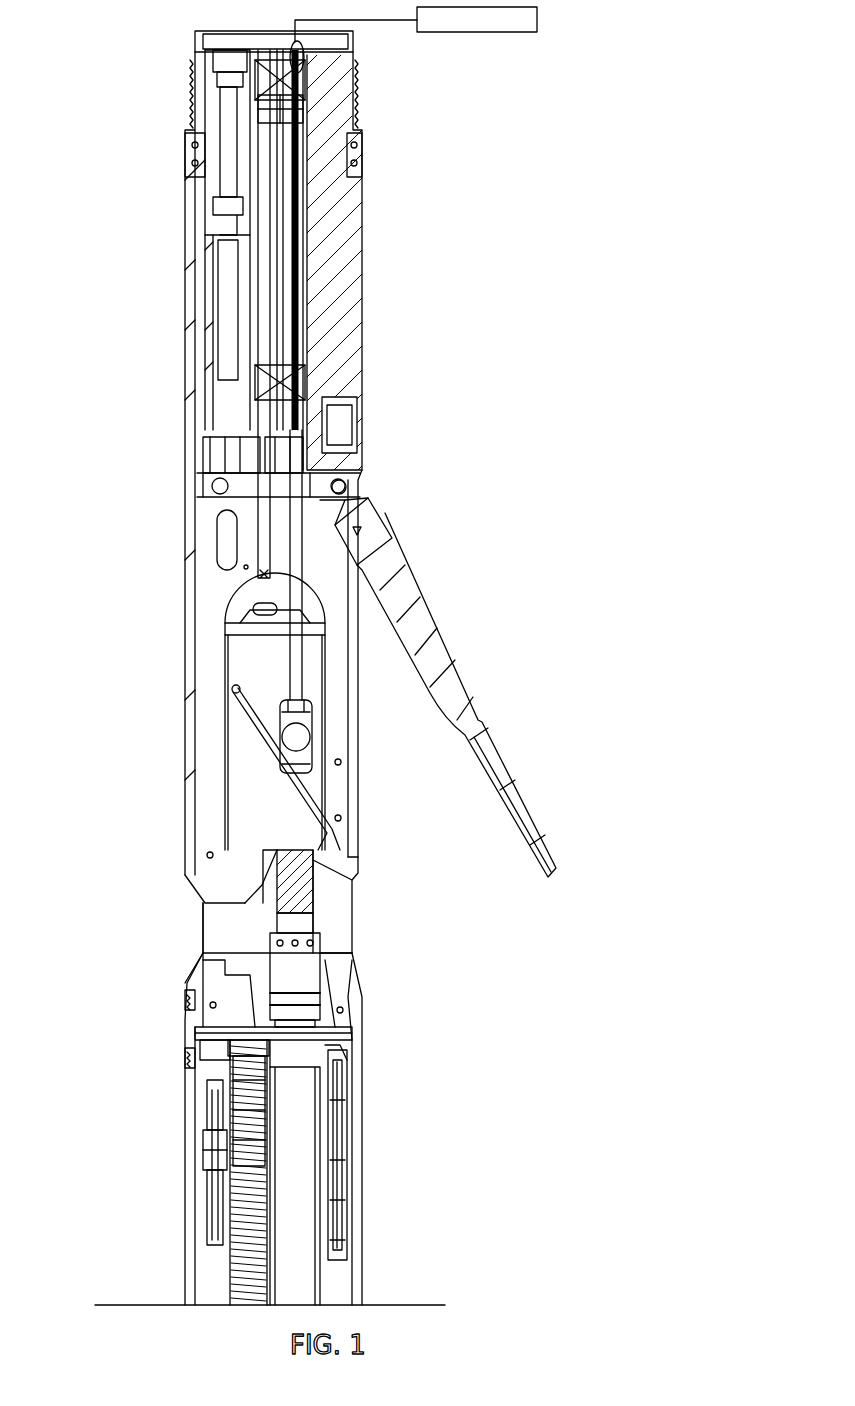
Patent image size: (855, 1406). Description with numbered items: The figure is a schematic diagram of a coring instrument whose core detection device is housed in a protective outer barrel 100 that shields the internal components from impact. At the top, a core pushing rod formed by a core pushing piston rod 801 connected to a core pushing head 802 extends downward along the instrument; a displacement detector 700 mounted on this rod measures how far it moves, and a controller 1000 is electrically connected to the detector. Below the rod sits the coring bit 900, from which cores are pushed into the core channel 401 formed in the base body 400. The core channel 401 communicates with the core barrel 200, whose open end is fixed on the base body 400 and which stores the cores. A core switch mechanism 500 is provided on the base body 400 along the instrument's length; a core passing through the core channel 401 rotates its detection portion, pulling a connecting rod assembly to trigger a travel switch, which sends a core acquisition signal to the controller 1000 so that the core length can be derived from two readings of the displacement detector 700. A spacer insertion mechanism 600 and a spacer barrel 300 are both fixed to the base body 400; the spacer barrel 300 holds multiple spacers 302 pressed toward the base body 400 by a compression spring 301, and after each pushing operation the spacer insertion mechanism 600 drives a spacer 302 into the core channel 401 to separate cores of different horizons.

The controller 1000 is at (416, 24).
The displacement detector 700 is at (307, 58).
The core pushing piston rod 801 is at (294, 100).
The protective outer barrel 100 is at (188, 820).
The core pushing head 802 is at (310, 724).
The coring bit 900 is at (305, 976).
The spacer 302 is at (240, 1047).
The core channel 401 is at (304, 1040).
The base body 400 is at (350, 1027).
The core switch mechanism 500 is at (342, 1110).
The spacer insertion mechanism 600 is at (201, 1130).
The compression spring 301 is at (236, 1207).
The spacer barrel 300 is at (226, 1275).
The core barrel 200 is at (305, 1247).